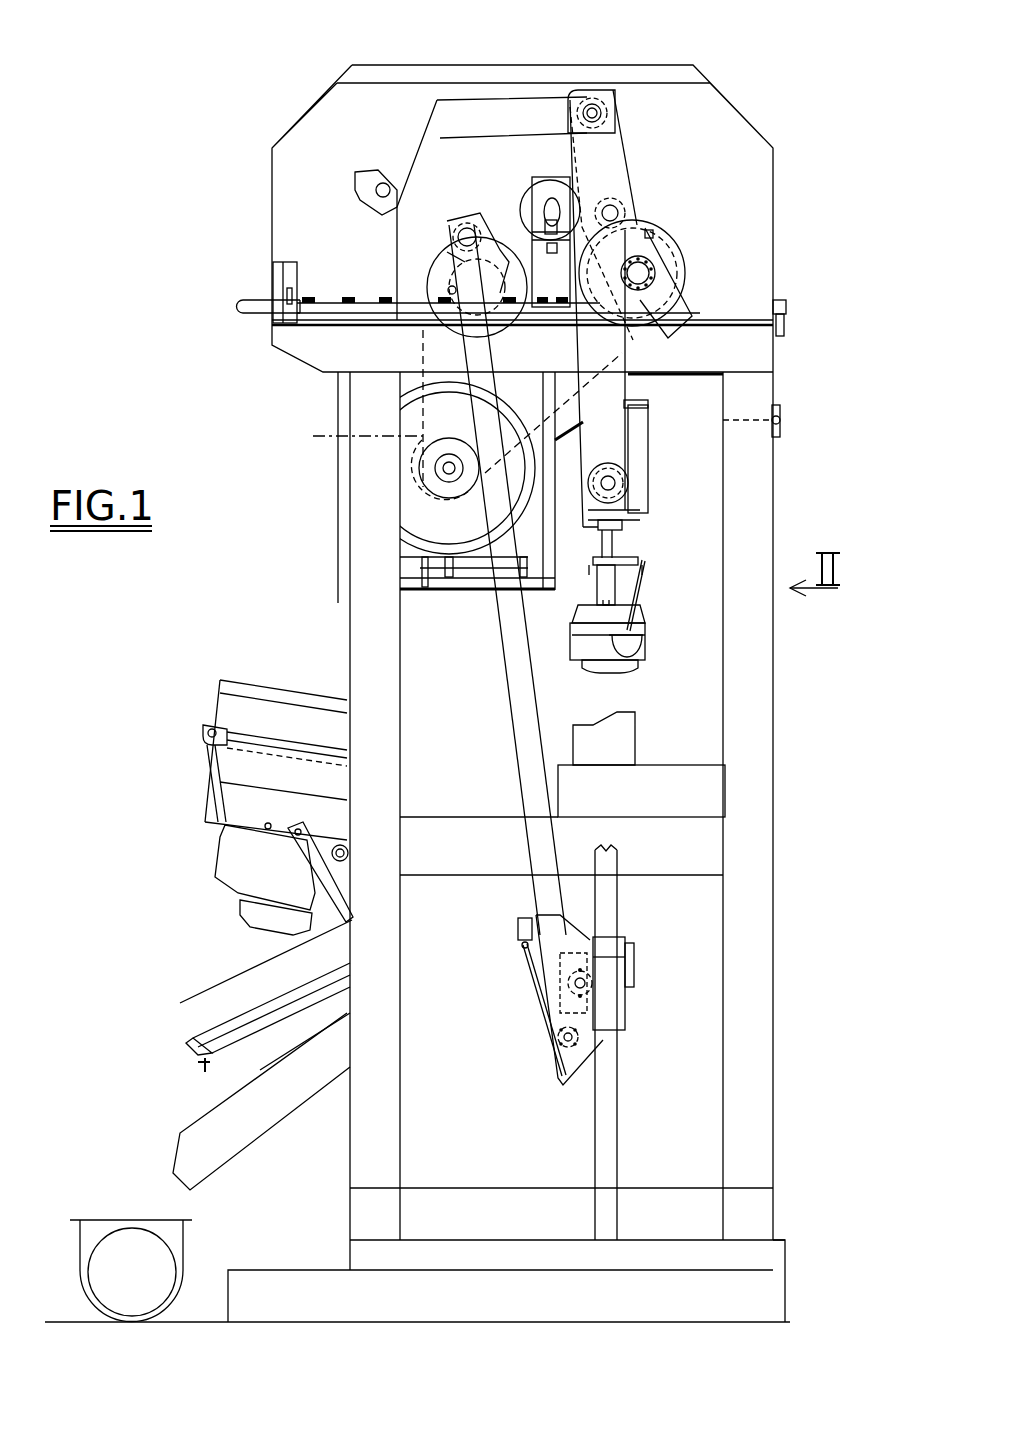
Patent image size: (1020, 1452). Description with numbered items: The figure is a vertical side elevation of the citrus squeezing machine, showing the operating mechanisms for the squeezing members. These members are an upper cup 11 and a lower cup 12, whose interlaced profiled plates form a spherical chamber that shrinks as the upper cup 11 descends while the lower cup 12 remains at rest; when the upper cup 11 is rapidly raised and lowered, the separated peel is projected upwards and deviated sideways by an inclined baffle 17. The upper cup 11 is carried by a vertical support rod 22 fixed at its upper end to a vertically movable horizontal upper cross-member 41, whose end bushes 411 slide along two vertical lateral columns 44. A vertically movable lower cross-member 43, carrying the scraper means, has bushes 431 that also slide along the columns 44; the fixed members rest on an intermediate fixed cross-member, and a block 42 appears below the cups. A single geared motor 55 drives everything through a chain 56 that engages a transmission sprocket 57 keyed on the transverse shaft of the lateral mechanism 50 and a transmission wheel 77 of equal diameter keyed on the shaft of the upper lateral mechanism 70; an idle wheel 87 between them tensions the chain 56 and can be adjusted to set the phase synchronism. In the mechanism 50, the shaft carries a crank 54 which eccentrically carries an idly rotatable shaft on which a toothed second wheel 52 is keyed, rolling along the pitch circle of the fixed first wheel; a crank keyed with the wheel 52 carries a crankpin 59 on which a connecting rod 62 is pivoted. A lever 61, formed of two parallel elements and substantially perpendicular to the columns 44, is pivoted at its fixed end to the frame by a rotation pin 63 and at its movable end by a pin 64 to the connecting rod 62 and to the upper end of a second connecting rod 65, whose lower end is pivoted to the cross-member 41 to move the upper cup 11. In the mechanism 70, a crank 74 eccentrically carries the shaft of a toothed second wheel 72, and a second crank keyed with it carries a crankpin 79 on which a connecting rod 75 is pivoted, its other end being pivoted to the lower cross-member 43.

The upper cup 11 is at (645, 650).
The lower cup 12 is at (636, 722).
The inclined baffle 17 is at (582, 603).
The vertical support rod 22 is at (615, 537).
The upper cross-member 41 is at (623, 528).
The bushes 411 is at (650, 468).
The base block 42 is at (677, 765).
The lower cross-member 43 is at (637, 957).
The bushes 431 is at (626, 1002).
The vertical lateral columns 44 is at (597, 1130).
The lateral mechanism 50 is at (538, 211).
The second wheel 52 is at (663, 247).
The crank 54 is at (690, 283).
The geared motor 55 is at (410, 507).
The chain 56 is at (445, 415).
The transmission sprocket 57 is at (685, 258).
The crankpin 59 is at (614, 207).
The lever 61 is at (471, 102).
The connecting rod 62 is at (637, 207).
The rotation pin 63 is at (384, 183).
The pin 64 is at (592, 104).
The second connecting rod 65 is at (622, 395).
The upper lateral mechanism 70 is at (370, 216).
The second wheel 72 is at (508, 240).
The crank 74 is at (448, 292).
The connecting rod 75 is at (510, 708).
The transmission wheel 77 is at (445, 290).
The crankpin 79 is at (443, 237).
The idle wheel 87 is at (550, 178).